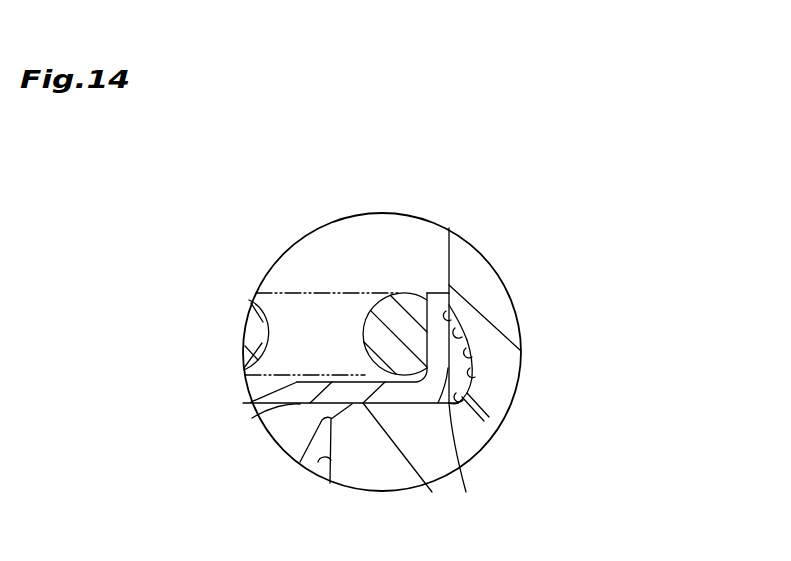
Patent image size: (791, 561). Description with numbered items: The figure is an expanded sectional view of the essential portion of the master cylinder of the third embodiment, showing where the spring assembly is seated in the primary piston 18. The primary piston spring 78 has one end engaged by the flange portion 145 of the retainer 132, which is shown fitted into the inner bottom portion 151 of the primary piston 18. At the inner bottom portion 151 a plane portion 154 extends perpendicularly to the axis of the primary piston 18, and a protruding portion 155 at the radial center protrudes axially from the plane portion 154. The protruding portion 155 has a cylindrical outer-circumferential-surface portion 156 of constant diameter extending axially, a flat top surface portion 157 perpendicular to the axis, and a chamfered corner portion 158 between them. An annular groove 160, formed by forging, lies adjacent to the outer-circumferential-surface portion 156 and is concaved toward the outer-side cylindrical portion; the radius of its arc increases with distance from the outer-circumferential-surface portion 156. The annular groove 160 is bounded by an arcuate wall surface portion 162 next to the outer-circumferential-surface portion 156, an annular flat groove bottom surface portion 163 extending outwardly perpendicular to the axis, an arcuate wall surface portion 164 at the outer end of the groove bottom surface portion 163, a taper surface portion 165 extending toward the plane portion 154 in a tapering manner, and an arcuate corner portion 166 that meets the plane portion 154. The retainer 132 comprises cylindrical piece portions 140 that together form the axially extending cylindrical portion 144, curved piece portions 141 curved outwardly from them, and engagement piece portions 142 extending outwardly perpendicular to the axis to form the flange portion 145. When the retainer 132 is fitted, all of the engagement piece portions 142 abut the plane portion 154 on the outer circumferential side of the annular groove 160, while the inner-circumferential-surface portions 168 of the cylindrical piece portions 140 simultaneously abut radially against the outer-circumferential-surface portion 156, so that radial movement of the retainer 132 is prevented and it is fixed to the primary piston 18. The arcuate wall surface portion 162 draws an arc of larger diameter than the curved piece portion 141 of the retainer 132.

The primary piston 18 is at (461, 231).
The primary piston spring 78 is at (253, 331).
The retainer 132 is at (249, 412).
The cylindrical piece portions 140 is at (281, 409).
The curved piece portions 141 is at (453, 450).
The engagement piece portions 142 is at (440, 300).
The cylindrical portion 144 is at (344, 380).
The flange portion 145 is at (422, 293).
The inner bottom portion 151 is at (447, 265).
The plane portion 154 is at (449, 241).
The protruding portion 155 is at (443, 458).
The outer-circumferential-surface portion 156 is at (392, 405).
The top surface portion 157 is at (318, 462).
The chamfered corner portion 158 is at (300, 462).
The annular groove 160 is at (462, 356).
The arcuate wall surface portion 162 is at (464, 400).
The groove bottom surface portion 163 is at (475, 377).
The arcuate wall surface portion 164 is at (473, 358).
The taper surface portion 165 is at (462, 338).
The arcuate corner portion 166 is at (451, 315).
The inner-circumferential-surface portions 168 is at (300, 406).